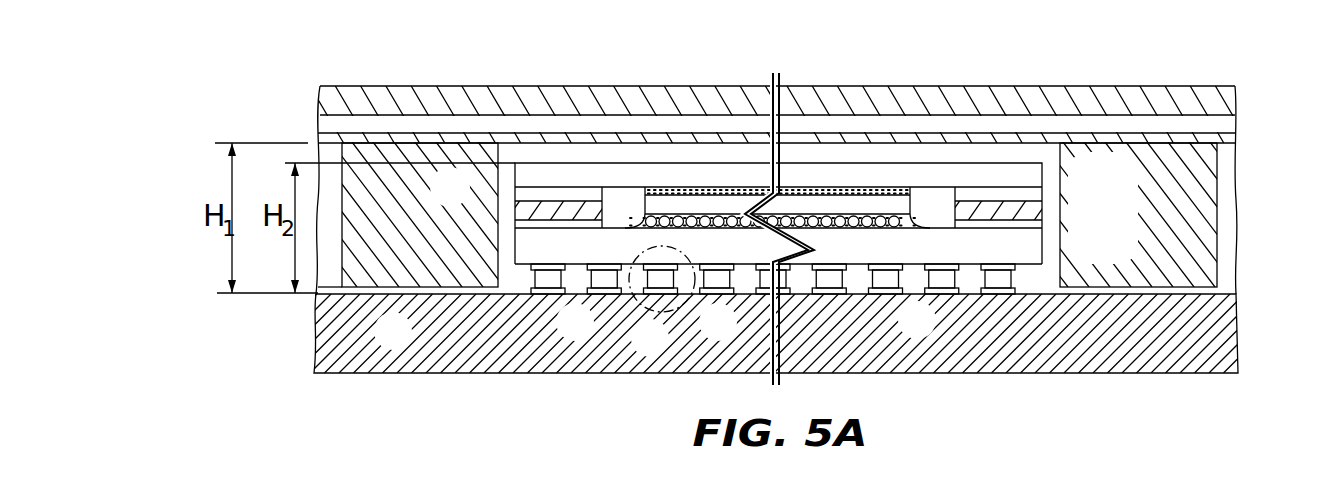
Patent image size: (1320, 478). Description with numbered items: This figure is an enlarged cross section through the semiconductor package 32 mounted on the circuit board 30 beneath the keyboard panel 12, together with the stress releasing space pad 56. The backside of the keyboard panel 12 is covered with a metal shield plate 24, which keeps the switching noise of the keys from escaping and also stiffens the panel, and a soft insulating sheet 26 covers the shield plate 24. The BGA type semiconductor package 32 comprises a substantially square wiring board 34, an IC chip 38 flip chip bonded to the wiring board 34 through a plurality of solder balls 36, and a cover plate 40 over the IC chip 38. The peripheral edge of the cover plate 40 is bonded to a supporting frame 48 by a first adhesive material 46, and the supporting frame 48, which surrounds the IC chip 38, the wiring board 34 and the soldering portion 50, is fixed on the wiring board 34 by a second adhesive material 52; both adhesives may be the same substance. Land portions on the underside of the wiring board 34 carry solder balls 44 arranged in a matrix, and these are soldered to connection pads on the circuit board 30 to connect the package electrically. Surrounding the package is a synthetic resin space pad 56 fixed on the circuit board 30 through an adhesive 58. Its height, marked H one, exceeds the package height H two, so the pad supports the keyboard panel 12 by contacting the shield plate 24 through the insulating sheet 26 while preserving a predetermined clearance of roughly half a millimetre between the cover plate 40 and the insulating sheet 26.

The keyboard panel 12 is at (929, 92).
The shield plate 24 is at (1162, 112).
The insulating sheet 26 is at (1226, 134).
The circuit board 30 is at (1072, 376).
The semiconductor package 32 is at (810, 163).
The wiring board 34 is at (578, 253).
The solder balls 36 is at (723, 228).
The IC chip 38 is at (718, 200).
The cover plate 40 is at (515, 173).
The solder balls 44 is at (658, 296).
The first adhesive material 46 is at (1034, 190).
The supporting frame 48 is at (1037, 210).
The soldering portion 50 is at (914, 226).
The second adhesive material 52 is at (1035, 230).
The space pad 56 is at (400, 272).
The adhesive 58 is at (332, 306).